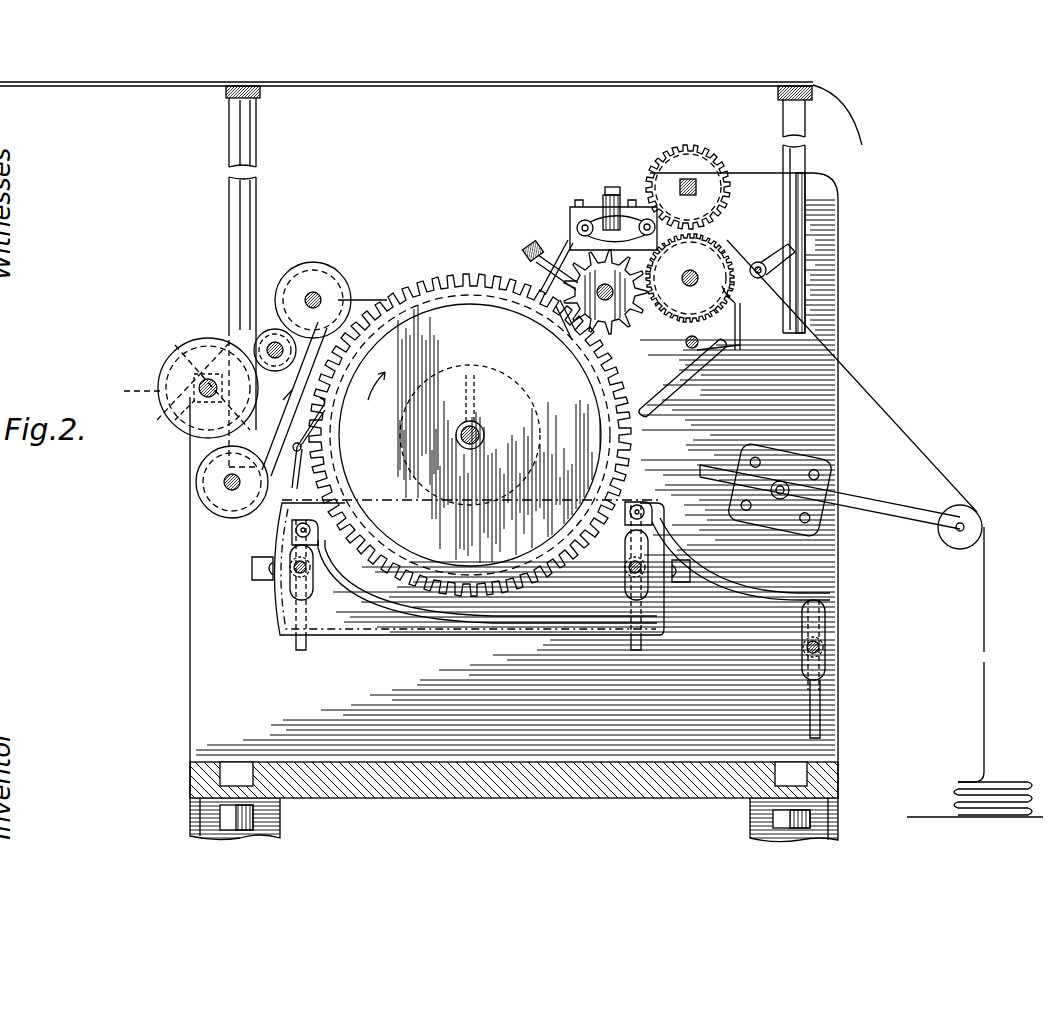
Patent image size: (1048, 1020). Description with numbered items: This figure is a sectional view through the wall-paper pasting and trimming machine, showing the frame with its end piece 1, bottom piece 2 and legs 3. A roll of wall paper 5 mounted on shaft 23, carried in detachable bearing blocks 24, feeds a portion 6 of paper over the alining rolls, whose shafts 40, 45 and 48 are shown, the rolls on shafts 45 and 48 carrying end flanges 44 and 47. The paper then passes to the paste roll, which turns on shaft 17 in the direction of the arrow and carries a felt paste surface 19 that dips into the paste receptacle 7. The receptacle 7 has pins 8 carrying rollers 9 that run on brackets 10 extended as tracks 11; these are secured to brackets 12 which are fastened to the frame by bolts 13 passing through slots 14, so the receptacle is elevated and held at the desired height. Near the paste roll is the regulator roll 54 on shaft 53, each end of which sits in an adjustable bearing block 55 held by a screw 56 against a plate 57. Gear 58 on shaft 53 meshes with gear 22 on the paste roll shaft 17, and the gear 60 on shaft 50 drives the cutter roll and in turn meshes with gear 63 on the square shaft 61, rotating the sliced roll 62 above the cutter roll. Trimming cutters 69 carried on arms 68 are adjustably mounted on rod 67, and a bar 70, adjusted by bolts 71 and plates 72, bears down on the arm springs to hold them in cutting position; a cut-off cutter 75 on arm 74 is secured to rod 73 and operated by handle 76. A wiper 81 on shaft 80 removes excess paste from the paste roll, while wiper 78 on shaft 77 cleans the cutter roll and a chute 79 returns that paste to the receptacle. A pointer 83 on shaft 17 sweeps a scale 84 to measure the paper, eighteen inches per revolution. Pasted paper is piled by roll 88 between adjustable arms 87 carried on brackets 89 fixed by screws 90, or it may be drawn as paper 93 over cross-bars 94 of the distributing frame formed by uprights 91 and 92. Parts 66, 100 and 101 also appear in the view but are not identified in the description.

The end pieces 1 is at (190, 537).
The bottom piece 2 is at (404, 799).
The legs 3 is at (274, 818).
The roll of wall paper 5 is at (135, 391).
The paper portion 6 is at (291, 383).
The paste receptacle 7 is at (345, 636).
The pins 8 is at (471, 540).
The roller 9 is at (293, 530).
The brackets 10 is at (318, 546).
The tracks 11 is at (746, 603).
The brackets 12 is at (295, 576).
The bolts 13 is at (306, 573).
The slots 14 is at (822, 706).
The shaft 17 is at (480, 436).
The paste carrying face 19 is at (472, 530).
The gear 22 is at (650, 497).
The shaft 23 is at (199, 384).
The bearing blocks 24 is at (176, 420).
The shaft 40 is at (222, 483).
The flange 44 is at (272, 330).
The shaft 45 is at (266, 347).
The flange 47 is at (343, 288).
The shaft 48 is at (318, 291).
The shaft 50 is at (706, 271).
The shaft 53 is at (605, 292).
The regulator roll 54 is at (610, 347).
The bearing block 55 is at (620, 332).
The bolt 56 is at (526, 252).
The plate 57 is at (538, 281).
The gear 58 is at (626, 322).
The gear 60 is at (688, 348).
The shaft 61 is at (703, 189).
The sliced roll 62 is at (956, 794).
The gear 63 is at (705, 152).
The bearing 66 is at (621, 179).
The rod 67 is at (578, 230).
The arm 68 is at (712, 290).
The cutters 69 is at (690, 278).
The bar 70 is at (571, 218).
The bolts 71 is at (618, 193).
The plates 72 is at (607, 188).
The rod 73 is at (767, 278).
The arm 74 is at (655, 240).
The cutter 75 is at (757, 262).
The handle 76 is at (792, 250).
The shaft 77 is at (699, 357).
The wiper 78 is at (741, 345).
The chute 79 is at (651, 415).
The shaft 80 is at (312, 480).
The wiper 81 is at (300, 433).
The pointer 83 is at (503, 380).
The scale 84 is at (440, 395).
The arm 87 is at (862, 505).
The roll 88 is at (962, 549).
The brackets 89 is at (800, 463).
The screws 90 is at (778, 500).
The upright 91 is at (806, 170).
The upright 92 is at (256, 180).
The paper 93 is at (438, 86).
The cross-bars 94 is at (258, 92).
The cord 100 is at (838, 323).
The guide 101 is at (706, 372).